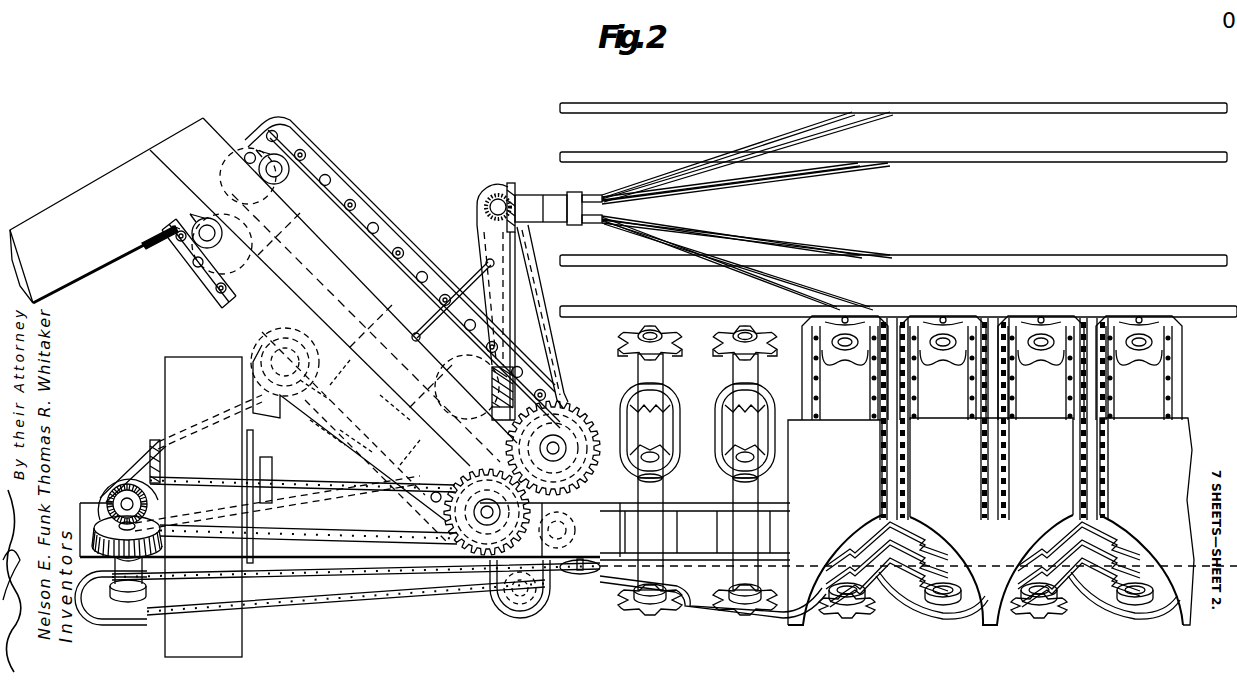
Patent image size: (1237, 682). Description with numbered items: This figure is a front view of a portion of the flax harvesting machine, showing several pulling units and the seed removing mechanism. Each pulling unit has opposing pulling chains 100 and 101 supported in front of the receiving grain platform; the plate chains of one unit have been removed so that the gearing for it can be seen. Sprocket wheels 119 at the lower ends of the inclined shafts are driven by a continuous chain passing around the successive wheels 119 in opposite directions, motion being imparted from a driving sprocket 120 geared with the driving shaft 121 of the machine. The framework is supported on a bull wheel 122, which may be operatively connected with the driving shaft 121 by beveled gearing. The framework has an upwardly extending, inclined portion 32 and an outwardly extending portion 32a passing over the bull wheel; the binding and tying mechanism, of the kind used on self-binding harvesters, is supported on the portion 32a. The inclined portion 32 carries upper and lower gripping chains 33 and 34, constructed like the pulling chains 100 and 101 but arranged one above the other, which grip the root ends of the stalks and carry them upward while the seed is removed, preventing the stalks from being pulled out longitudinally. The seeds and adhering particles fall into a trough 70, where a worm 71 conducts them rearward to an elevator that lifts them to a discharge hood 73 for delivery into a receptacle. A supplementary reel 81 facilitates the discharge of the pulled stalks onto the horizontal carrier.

The outwardly extending portion of framework 32a is at (111, 178).
The upwardly extending portion of framework 32 is at (292, 230).
The upper gripping chain 33 is at (233, 290).
The lower gripping chain 34 is at (381, 240).
The discharge hood 73 is at (232, 309).
The supplementary reel 81 is at (1123, 255).
The sprocket wheel 119 is at (674, 605).
The driving sprocket 120 is at (158, 594).
The driving shaft 121 is at (125, 502).
The bull wheel 122 is at (175, 380).
The trough 70 is at (523, 607).
The worm 71 is at (540, 608).
The pulling chain 100 is at (918, 408).
The pulling chain 101 is at (865, 403).